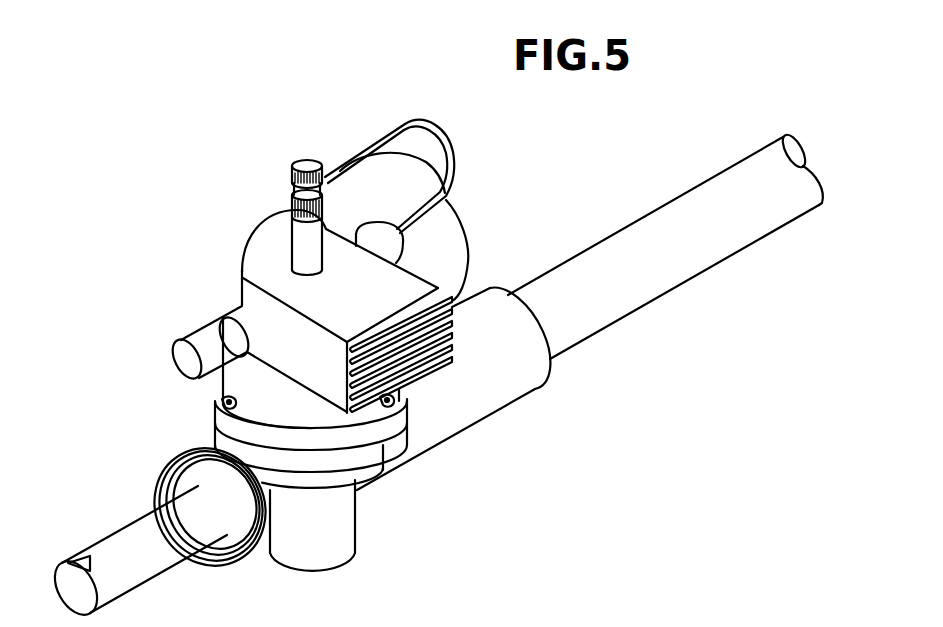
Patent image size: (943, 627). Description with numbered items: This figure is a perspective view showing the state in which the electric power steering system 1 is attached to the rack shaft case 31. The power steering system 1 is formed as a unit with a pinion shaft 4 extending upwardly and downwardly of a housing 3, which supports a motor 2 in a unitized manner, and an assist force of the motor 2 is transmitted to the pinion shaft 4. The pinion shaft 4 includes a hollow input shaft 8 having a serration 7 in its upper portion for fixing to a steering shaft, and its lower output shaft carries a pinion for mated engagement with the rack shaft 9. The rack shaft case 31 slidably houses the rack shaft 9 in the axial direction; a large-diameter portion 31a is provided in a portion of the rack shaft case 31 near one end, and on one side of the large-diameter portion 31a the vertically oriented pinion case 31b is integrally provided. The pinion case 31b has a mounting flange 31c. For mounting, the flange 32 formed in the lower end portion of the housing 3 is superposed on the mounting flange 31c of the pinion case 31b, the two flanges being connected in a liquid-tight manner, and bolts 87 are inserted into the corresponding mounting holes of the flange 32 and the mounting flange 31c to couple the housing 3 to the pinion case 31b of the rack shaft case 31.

The power steering system 1 is at (346, 127).
The motor 2 is at (460, 218).
The housing 3 is at (233, 382).
The pinion shaft 4 is at (288, 253).
The serration 7 is at (292, 181).
The input shaft 8 is at (298, 168).
The rack shaft 9 is at (138, 537).
The rack shaft case 31 is at (677, 272).
The large-diameter portion 31a is at (478, 410).
The pinion case 31b is at (338, 552).
The mounting flange 31c is at (385, 453).
The flange 32 is at (402, 418).
The bolts 87 is at (217, 407).